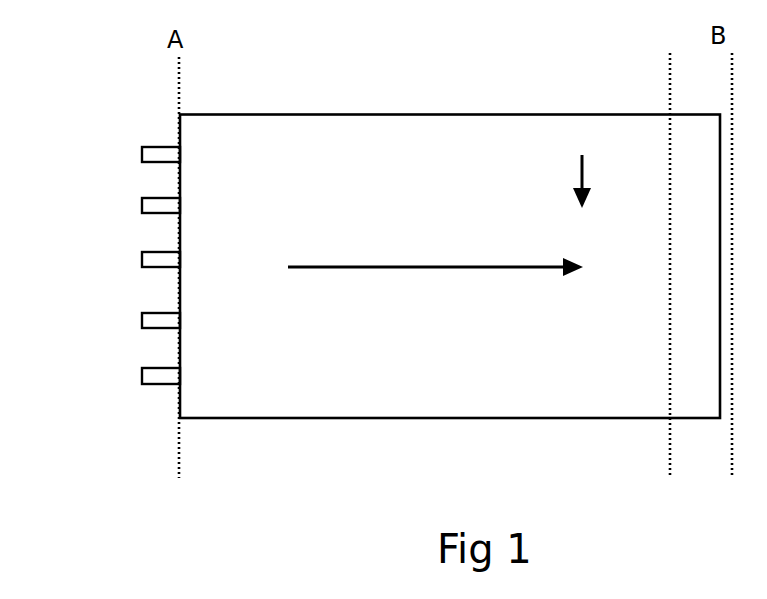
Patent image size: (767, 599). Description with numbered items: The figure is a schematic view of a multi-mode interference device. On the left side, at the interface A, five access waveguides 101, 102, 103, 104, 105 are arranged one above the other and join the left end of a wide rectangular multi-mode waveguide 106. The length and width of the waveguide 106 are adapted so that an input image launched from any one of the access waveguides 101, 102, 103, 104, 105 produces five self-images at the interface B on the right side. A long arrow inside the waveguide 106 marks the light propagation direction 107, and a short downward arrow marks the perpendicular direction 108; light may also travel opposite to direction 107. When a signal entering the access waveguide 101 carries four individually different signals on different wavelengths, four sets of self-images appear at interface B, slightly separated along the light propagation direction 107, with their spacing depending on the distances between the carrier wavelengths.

The access waveguide 101 is at (153, 155).
The access waveguide 102 is at (152, 200).
The access waveguide 103 is at (150, 254).
The access waveguide 104 is at (150, 320).
The access waveguide 105 is at (152, 370).
The waveguide 106 is at (360, 420).
The light propagation direction 107 is at (335, 265).
The perpendicular direction 108 is at (580, 173).